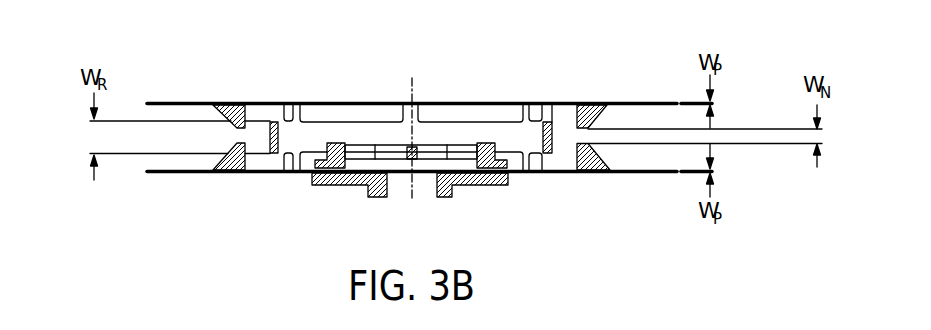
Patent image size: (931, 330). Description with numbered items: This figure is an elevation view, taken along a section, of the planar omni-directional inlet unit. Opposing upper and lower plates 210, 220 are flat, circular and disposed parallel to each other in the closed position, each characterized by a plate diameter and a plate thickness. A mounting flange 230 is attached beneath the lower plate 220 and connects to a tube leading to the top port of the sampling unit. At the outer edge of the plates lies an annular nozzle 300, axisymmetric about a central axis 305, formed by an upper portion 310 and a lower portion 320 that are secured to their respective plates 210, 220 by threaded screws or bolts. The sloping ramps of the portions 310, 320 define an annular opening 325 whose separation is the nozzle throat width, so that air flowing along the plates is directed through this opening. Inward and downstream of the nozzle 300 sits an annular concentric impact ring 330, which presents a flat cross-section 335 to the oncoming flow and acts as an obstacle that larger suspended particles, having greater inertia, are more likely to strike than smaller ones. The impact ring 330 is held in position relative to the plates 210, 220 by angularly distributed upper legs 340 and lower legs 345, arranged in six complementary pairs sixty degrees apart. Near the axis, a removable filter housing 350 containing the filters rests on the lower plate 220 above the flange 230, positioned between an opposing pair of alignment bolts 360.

The upper plate 210 is at (643, 104).
The lower plate 220 is at (199, 174).
The mounting flange 230 is at (508, 173).
The annular nozzle 300 is at (105, 141).
The axis 305 is at (395, 208).
The upper portion 310 is at (233, 105).
The lower portion 320 is at (222, 156).
The annular opening 325 is at (600, 171).
The impact ring 330 is at (337, 124).
The flat cross-section 335 is at (556, 167).
The upper legs 340 is at (420, 106).
The lower legs 345 is at (273, 173).
The removable filter housing 350 is at (460, 135).
The alignment bolts 360 is at (310, 141).